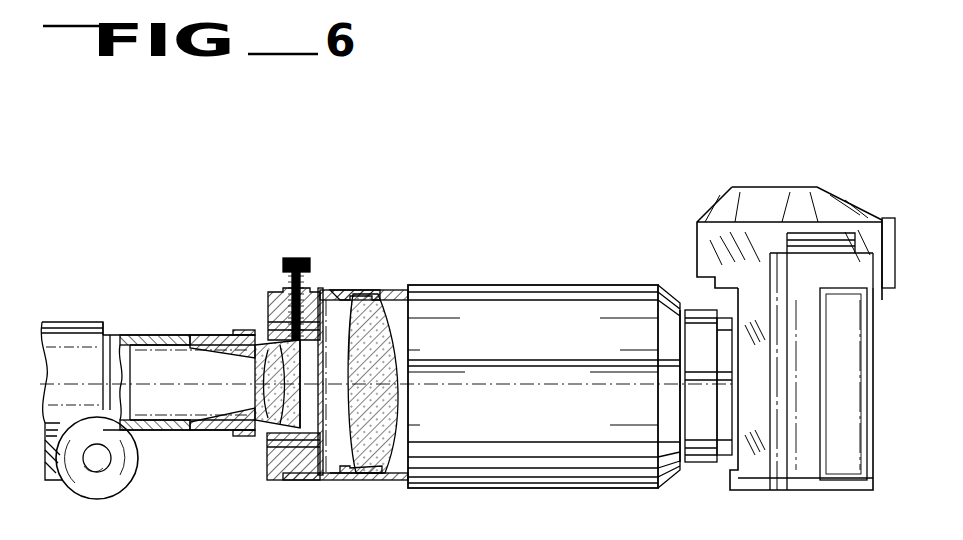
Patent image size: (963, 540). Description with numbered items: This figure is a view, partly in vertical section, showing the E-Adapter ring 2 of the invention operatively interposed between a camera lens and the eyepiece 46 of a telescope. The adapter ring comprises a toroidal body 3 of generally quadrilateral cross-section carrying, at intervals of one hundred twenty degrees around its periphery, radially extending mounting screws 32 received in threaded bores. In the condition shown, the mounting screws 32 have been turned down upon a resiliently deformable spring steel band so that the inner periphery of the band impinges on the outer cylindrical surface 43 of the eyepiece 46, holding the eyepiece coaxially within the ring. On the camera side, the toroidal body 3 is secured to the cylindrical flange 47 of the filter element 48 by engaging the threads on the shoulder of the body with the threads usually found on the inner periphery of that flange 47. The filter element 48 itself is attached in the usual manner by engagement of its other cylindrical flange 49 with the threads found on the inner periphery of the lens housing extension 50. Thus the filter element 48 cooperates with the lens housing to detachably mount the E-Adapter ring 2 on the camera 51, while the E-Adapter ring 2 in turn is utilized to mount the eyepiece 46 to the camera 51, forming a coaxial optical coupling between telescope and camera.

The E-Adapter ring 2 is at (272, 496).
The toroidal body 3 is at (266, 303).
The mounting screws 32 is at (306, 290).
The outer cylindrical surface 43 is at (212, 336).
The eyepiece 46 is at (214, 396).
The cylindrical flange 47 is at (345, 310).
The filter element 48 is at (362, 300).
The cylindrical flange 49 is at (363, 383).
The lens housing extension 50 is at (403, 343).
The camera 51 is at (749, 176).